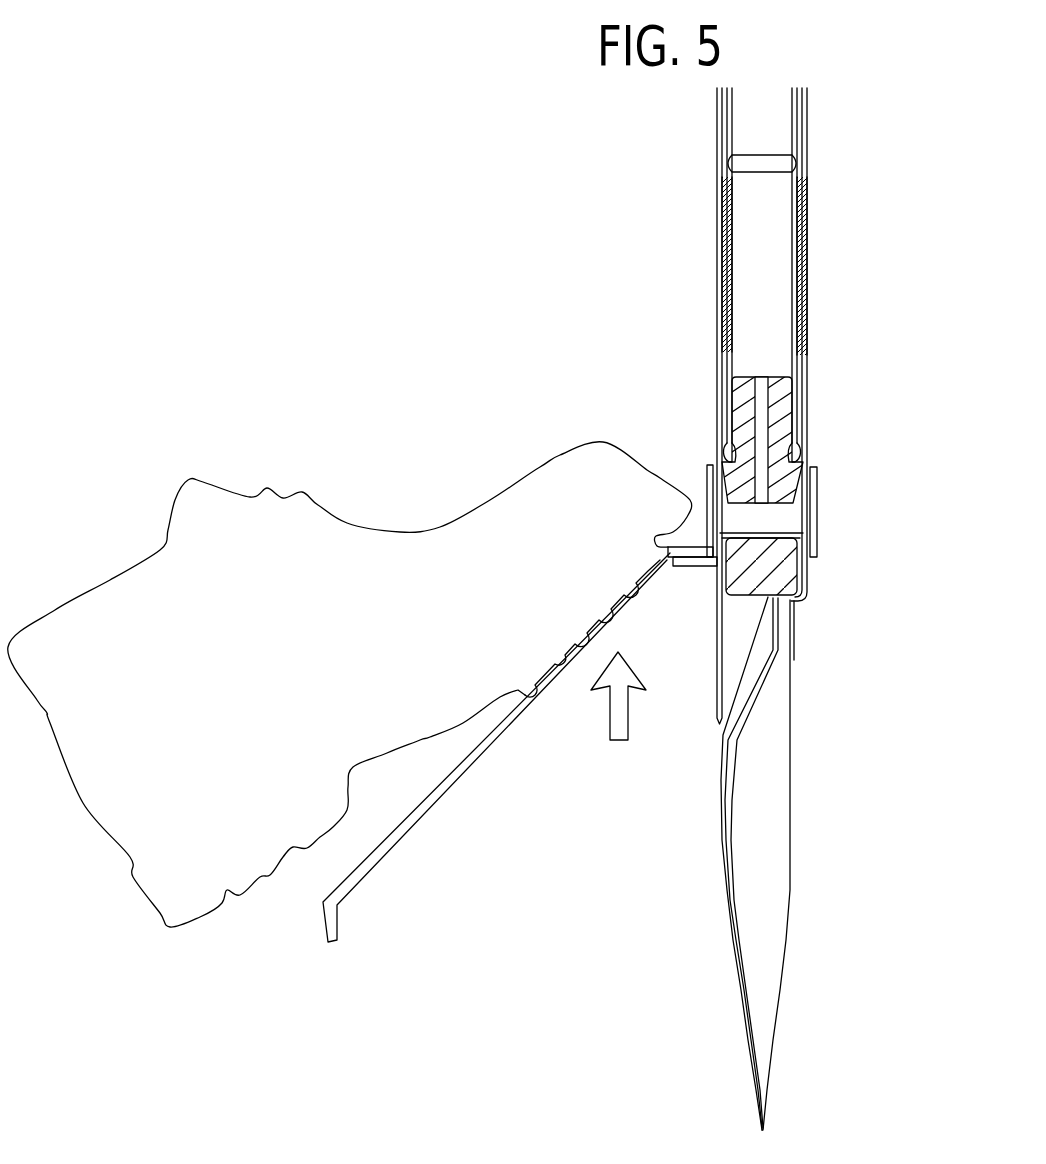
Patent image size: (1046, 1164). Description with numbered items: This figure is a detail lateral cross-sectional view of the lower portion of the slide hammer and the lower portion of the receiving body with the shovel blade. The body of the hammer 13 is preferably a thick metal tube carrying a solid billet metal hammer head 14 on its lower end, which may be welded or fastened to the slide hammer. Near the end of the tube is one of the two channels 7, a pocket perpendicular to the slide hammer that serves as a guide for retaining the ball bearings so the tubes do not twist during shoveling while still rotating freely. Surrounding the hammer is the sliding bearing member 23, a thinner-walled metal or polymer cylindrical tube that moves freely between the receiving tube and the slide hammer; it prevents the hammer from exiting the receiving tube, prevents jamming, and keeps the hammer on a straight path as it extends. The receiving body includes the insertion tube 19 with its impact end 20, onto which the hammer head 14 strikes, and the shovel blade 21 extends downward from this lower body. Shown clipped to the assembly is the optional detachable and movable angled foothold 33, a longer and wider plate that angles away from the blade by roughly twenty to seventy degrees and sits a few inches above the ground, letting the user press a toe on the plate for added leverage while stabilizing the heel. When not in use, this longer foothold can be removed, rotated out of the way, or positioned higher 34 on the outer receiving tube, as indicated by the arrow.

The body of the hammer 13 is at (777, 129).
The channel 7 is at (785, 165).
The sliding bearing member 23 is at (803, 227).
The insertion tube 19 is at (807, 368).
The hammer head 14 is at (790, 493).
The impact end 20 is at (798, 567).
The shovel blade 21 is at (722, 830).
The angled foothold 33 is at (345, 895).
The higher position 34 is at (630, 696).